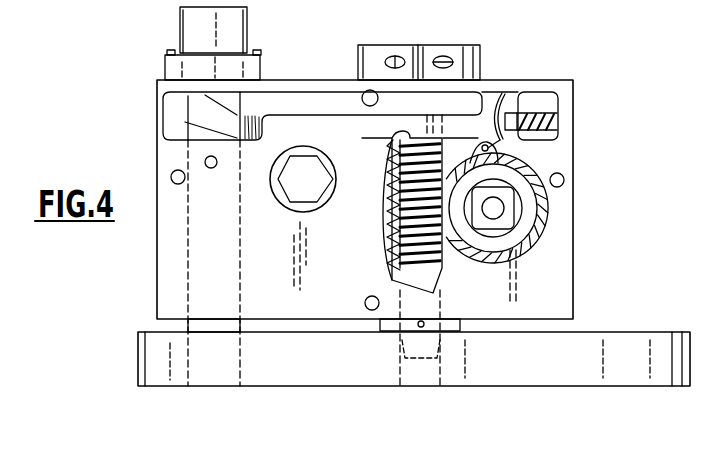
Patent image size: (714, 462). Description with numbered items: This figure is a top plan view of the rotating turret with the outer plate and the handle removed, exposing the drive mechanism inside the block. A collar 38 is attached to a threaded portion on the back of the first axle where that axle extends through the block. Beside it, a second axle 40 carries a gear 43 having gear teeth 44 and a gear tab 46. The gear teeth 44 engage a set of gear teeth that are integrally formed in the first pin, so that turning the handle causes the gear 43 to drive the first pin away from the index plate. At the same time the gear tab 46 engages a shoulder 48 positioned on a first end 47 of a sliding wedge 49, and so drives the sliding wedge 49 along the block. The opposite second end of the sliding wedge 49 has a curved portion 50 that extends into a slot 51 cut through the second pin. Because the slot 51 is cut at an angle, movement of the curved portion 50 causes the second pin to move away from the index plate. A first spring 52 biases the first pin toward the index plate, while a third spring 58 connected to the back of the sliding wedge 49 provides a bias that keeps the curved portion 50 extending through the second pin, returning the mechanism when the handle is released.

The collar 38 is at (370, 48).
The second axle 40 is at (498, 209).
The gear 43 is at (523, 203).
The gear teeth 44 is at (527, 250).
The gear tab 46 is at (490, 148).
The first end 47 is at (493, 93).
The shoulder 48 is at (513, 93).
The sliding wedge 49 is at (327, 120).
The curved portion 50 is at (205, 107).
The slot 51 is at (180, 121).
The first spring 52 is at (395, 135).
The third spring 58 is at (543, 113).